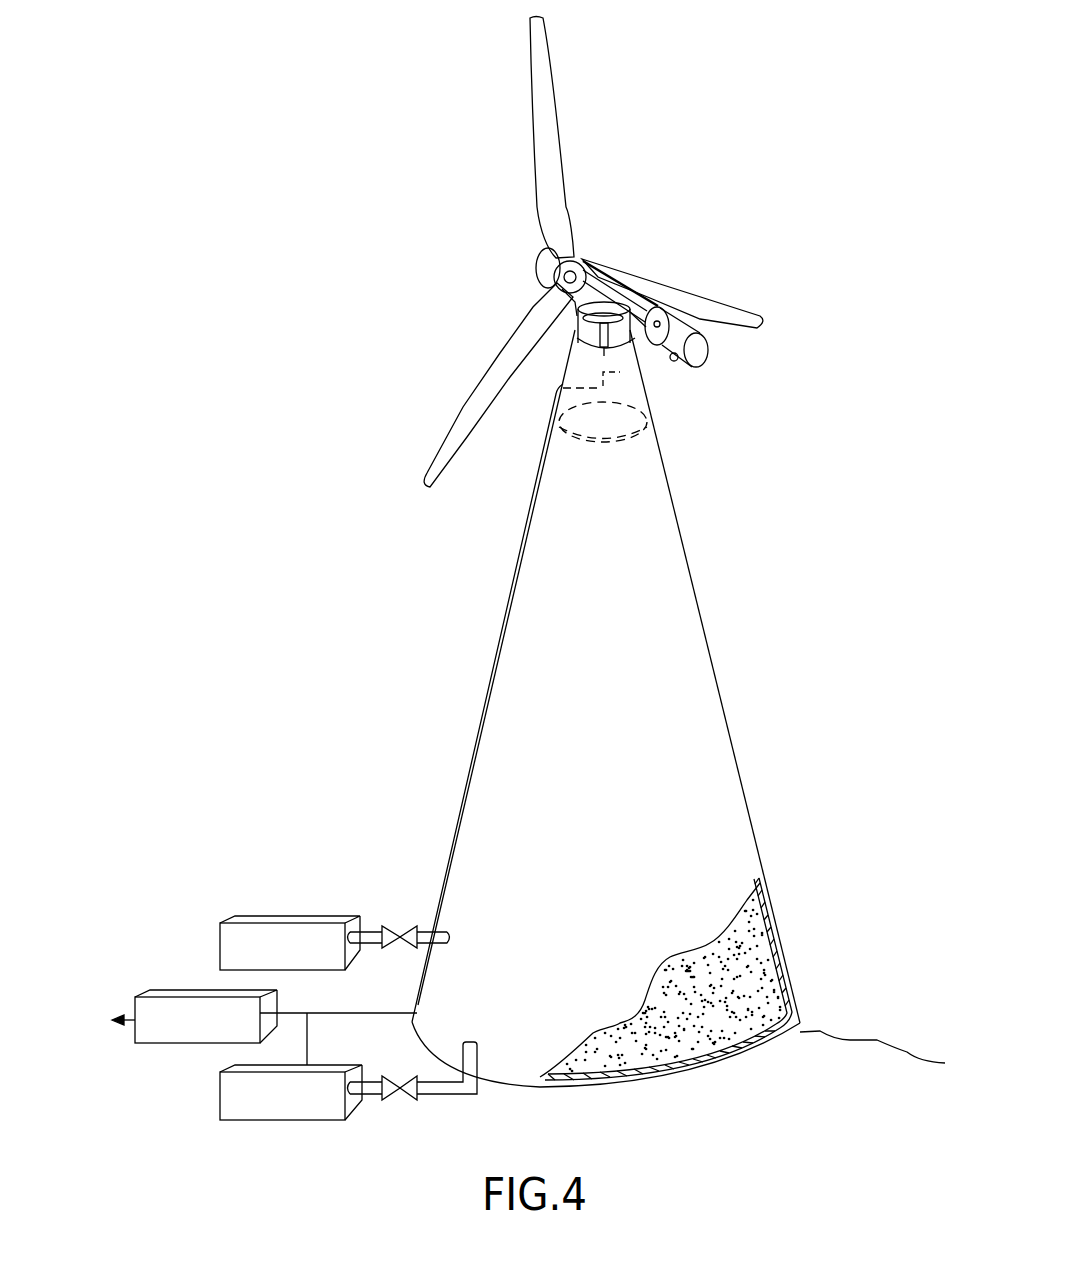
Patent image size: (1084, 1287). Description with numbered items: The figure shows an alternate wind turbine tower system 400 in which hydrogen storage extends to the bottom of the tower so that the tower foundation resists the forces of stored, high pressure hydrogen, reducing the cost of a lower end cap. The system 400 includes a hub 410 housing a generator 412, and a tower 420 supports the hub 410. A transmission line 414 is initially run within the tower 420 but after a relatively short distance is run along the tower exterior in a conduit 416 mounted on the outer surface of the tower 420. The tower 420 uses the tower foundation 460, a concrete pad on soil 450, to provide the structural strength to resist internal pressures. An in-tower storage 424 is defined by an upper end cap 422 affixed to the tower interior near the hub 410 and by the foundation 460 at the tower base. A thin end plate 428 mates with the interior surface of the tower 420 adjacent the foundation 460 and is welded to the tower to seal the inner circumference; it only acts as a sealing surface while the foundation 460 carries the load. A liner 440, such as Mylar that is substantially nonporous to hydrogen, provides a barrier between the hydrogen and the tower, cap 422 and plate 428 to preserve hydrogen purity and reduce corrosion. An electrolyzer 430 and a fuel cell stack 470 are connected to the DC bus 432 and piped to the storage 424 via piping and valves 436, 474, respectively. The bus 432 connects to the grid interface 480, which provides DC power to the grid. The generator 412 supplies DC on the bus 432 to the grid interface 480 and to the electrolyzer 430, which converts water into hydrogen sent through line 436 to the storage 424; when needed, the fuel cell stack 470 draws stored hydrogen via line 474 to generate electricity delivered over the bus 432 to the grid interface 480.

The system 400 is at (470, 278).
The hub 410 is at (648, 292).
The generator 412 is at (680, 327).
The transmission line 414 is at (620, 380).
The conduit 416 is at (547, 413).
The tower 420 is at (647, 410).
The upper end cap 422 is at (613, 430).
The in-tower storage 424 is at (755, 950).
The end plate 428 is at (707, 1070).
The electrolyzer 430 is at (300, 917).
The DC bus 432 is at (333, 1013).
The valve 436 is at (370, 927).
The liner 440 is at (787, 992).
The soil 450 is at (852, 1040).
The tower foundation 460 is at (785, 1050).
The fuel cell stack 470 is at (350, 1113).
The valve 474 is at (477, 1073).
The grid interface 480 is at (158, 990).